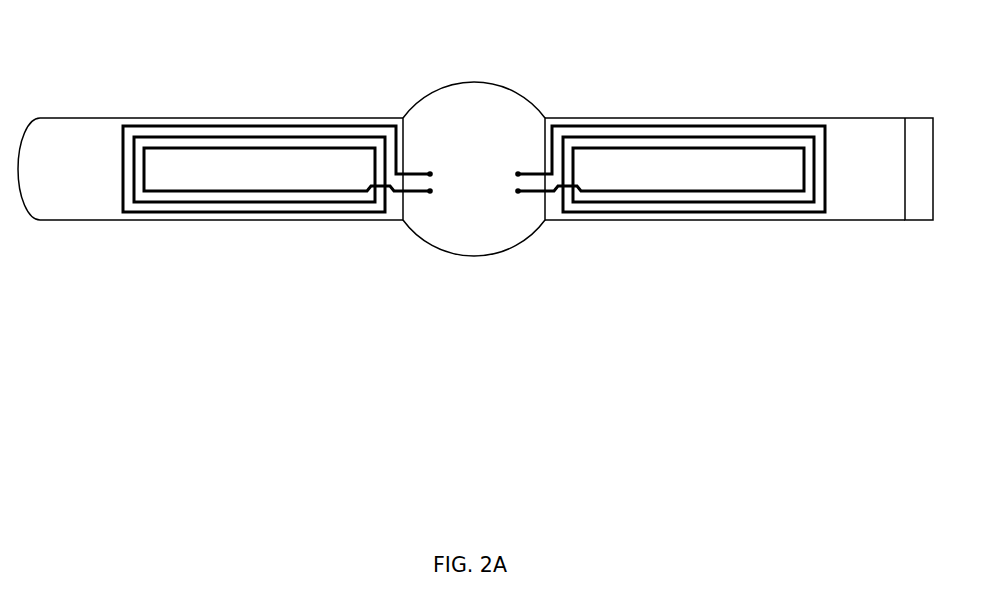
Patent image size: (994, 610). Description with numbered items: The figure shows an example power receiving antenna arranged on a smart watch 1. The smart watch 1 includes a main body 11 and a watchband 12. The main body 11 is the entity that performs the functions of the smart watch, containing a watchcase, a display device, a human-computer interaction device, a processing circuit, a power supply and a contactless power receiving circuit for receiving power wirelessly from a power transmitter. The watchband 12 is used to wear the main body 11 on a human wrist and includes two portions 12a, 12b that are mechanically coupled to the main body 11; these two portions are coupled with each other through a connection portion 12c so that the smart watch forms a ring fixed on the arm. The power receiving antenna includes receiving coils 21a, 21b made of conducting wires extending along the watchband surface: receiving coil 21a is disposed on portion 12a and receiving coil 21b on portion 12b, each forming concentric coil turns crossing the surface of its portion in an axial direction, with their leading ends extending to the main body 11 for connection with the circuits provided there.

The smart watch 1 is at (182, 61).
The main body 11 is at (486, 95).
The watchband 12 is at (838, 278).
The portion 12a is at (95, 213).
The portion 12b is at (640, 220).
The connection portion 12c is at (923, 213).
The receiving coil 21a is at (225, 125).
The receiving coil 21b is at (619, 123).